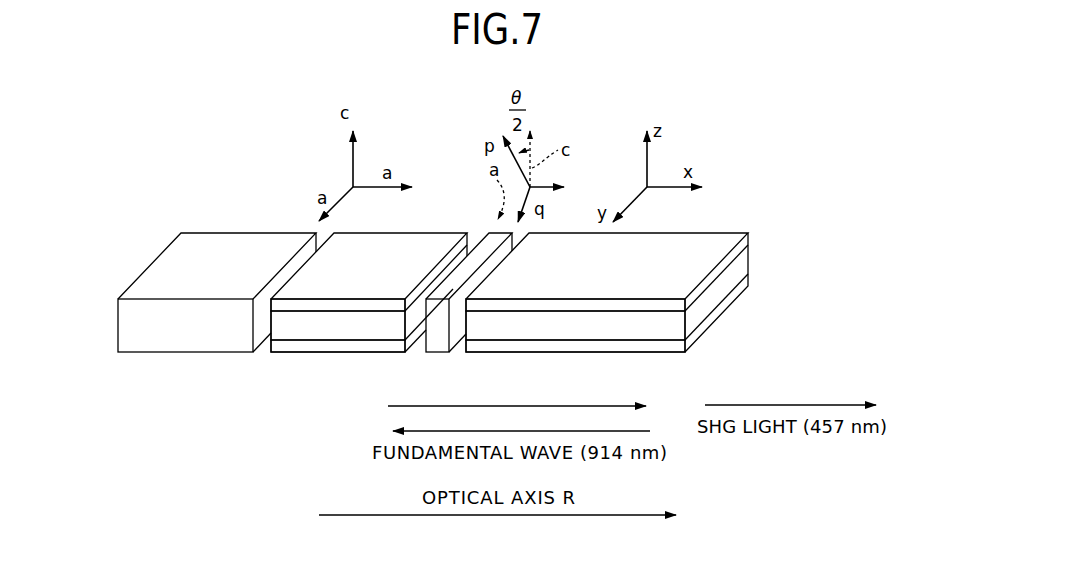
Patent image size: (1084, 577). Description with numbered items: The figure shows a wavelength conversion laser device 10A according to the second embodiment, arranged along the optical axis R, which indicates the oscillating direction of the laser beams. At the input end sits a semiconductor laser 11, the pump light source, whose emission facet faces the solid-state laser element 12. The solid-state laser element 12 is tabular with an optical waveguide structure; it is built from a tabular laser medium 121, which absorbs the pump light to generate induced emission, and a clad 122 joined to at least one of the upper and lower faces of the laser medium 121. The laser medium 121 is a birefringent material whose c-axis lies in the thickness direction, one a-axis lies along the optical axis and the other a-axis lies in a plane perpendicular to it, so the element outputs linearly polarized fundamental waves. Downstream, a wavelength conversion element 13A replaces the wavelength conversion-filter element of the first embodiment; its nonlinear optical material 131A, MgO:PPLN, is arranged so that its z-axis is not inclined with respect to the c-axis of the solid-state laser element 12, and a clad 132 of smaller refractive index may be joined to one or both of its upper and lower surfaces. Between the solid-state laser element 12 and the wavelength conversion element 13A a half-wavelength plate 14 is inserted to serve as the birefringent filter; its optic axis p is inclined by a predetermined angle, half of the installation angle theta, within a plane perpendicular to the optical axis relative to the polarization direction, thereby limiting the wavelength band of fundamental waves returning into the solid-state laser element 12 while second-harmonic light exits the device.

The wavelength conversion laser device 10A is at (714, 131).
The semiconductor laser 11 is at (200, 232).
The solid-state laser element 12 is at (388, 232).
The laser medium 121 is at (285, 324).
The clad 122 is at (347, 304).
The ½ wavelength plate 14 is at (487, 233).
The wavelength conversion element 13A is at (703, 232).
The nonlinear optical material 131A is at (662, 332).
The clad 132 is at (642, 304).